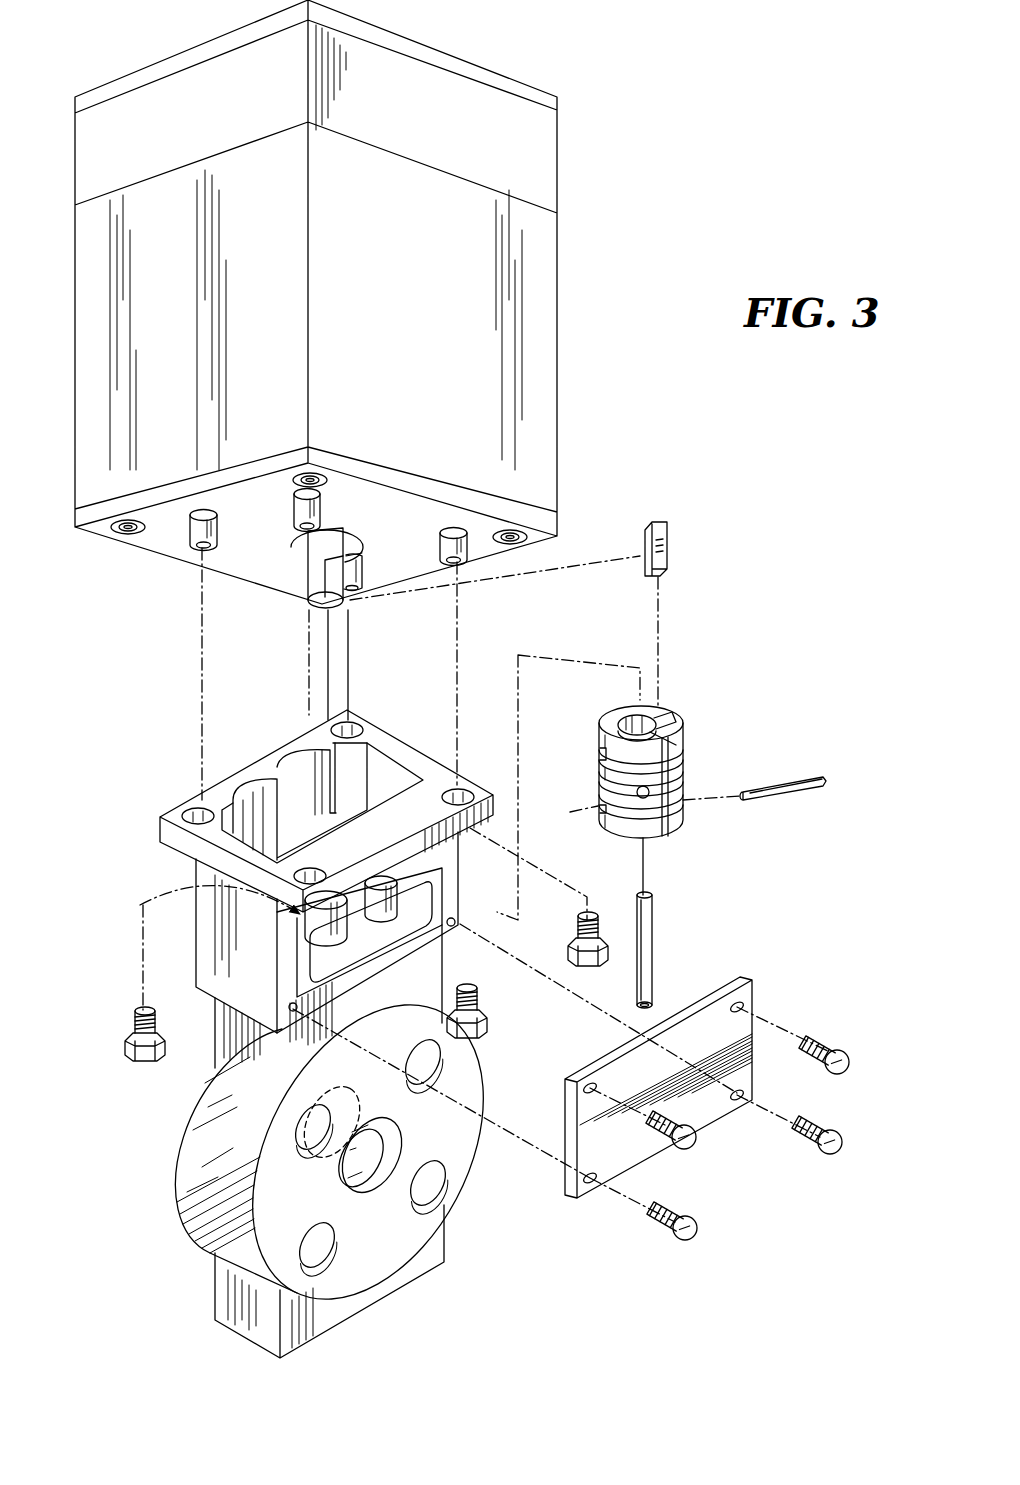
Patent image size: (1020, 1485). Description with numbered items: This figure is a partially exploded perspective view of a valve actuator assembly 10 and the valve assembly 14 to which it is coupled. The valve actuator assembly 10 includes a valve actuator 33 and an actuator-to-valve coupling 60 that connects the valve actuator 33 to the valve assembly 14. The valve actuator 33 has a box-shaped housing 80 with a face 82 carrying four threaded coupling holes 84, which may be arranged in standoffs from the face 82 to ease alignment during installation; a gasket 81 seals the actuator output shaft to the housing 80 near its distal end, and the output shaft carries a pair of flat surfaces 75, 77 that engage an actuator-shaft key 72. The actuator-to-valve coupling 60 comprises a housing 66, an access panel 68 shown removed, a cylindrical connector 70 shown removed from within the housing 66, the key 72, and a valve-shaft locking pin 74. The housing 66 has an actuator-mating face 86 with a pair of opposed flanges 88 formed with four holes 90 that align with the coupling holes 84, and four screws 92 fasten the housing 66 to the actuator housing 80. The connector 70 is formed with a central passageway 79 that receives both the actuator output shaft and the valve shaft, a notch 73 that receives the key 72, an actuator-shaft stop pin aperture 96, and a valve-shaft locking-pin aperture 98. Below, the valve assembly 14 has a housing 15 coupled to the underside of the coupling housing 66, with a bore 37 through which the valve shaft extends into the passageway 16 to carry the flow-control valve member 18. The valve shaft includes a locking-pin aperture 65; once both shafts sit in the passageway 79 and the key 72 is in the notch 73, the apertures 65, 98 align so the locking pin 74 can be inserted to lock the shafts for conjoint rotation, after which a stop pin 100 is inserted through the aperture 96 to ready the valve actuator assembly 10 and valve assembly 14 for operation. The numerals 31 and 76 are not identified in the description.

The valve actuator assembly 10 is at (626, 168).
The motor 31 is at (647, 114).
The valve actuator 33 is at (569, 375).
The housing 80 is at (528, 241).
The gasket 81 is at (350, 542).
The face 82 is at (412, 563).
The threaded coupling holes 84 is at (205, 552).
The flat surface 77 is at (327, 568).
The flat surface 75 is at (347, 593).
The actuator-shaft key 72 is at (669, 563).
The notch 73 is at (674, 718).
The central passageway 79 is at (636, 712).
The cylindrical connector 70 is at (684, 749).
The valve-shaft locking pin 74 is at (781, 790).
The actuator-shaft stop pin aperture 96 is at (639, 800).
The valve-shaft locking-pin aperture 98 is at (591, 800).
The stop pin 100 is at (655, 939).
The actuator-to-valve coupling 60 is at (157, 803).
The actuator-mating face 86 is at (420, 807).
The holes 90 is at (351, 724).
The flanges 88 is at (180, 854).
The housing 66 is at (208, 960).
The locking-pin aperture 65 is at (205, 916).
The bore 37 is at (366, 926).
The screws 92 is at (145, 1062).
The valve assembly 14 is at (178, 1120).
The housing 15 is at (205, 1187).
The passageway 16 is at (380, 1176).
The flow-control valve member 18 is at (350, 1162).
The access panel 68 is at (703, 1113).
The screws 76 is at (688, 1150).